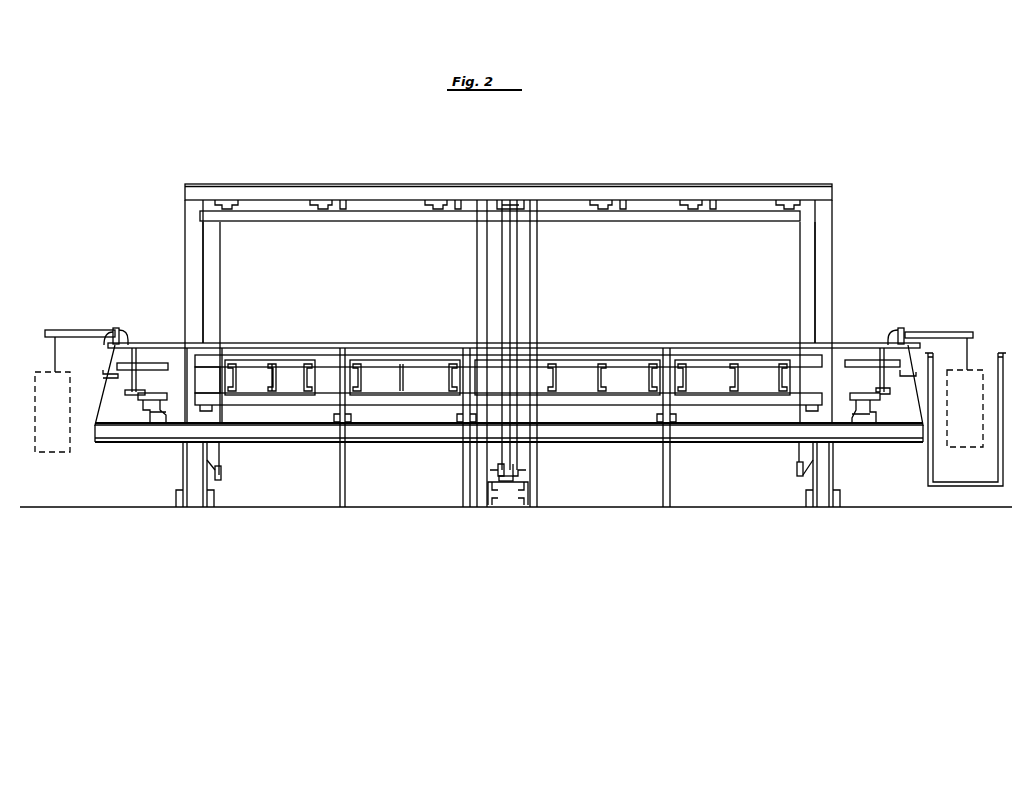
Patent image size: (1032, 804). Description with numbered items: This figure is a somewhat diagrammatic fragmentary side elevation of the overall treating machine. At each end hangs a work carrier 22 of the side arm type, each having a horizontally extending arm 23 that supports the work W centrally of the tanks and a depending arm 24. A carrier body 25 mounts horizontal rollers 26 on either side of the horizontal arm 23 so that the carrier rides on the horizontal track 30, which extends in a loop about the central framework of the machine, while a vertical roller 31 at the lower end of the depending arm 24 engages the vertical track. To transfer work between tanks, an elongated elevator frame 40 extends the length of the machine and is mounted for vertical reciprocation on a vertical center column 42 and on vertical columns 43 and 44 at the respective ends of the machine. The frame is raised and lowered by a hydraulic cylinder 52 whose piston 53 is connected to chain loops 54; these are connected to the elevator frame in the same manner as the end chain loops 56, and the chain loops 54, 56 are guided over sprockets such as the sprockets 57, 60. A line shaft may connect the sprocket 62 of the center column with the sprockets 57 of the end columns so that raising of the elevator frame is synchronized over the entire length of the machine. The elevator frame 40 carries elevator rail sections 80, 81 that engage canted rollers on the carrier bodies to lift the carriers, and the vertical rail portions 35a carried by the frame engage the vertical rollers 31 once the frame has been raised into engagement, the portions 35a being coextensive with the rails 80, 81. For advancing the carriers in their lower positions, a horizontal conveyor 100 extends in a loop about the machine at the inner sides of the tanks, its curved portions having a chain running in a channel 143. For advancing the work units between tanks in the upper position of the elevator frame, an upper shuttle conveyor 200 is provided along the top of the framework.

The work carrier 22 is at (905, 328).
The horizontal arm 23 is at (60, 330).
The depending arm 24 is at (136, 378).
The carrier body 25 is at (118, 330).
The horizontal roller 26 is at (108, 330).
The horizontal track 30 is at (392, 342).
The vertical roller 31 is at (133, 396).
The vertical rail portion 35a is at (256, 395).
The elevator frame 40 is at (288, 396).
The vertical center column 42 is at (537, 268).
The vertical column 43 is at (185, 246).
The vertical column 44 is at (832, 250).
The hydraulic cylinder 52 is at (510, 465).
The piston 53 is at (510, 300).
The chain loop 54 is at (517, 325).
The end chain loop 56 is at (220, 292).
The sprocket 57 is at (225, 204).
The sprocket 60 is at (221, 473).
The sprocket 62 is at (520, 204).
The elevator rail section 80 is at (256, 363).
The elevator rail section 81 is at (648, 362).
The horizontal conveyor 100 is at (138, 366).
The channel 143 is at (155, 395).
The upper shuttle conveyor 200 is at (325, 216).
The work W is at (965, 448).